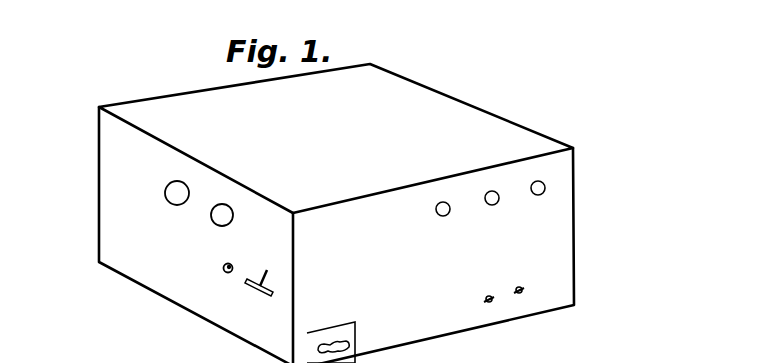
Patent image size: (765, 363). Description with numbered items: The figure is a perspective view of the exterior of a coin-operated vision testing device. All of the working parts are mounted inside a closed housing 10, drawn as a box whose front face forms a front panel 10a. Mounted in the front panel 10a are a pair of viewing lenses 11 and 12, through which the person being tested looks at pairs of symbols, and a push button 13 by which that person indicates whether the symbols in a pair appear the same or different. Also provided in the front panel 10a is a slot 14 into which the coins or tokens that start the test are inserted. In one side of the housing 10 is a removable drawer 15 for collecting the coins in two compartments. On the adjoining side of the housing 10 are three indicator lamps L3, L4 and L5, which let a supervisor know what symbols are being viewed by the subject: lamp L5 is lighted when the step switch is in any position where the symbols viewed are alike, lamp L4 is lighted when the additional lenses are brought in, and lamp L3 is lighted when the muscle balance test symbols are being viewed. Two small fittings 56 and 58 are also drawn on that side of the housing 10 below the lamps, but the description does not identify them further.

The housing 10 is at (471, 118).
The front panel 10a is at (112, 228).
The viewing lens 11 is at (222, 216).
The viewing lens 12 is at (177, 193).
The push button 13 is at (231, 263).
The slot 14 is at (263, 276).
The removable drawer 15 is at (333, 333).
The indicator lamp L3 is at (446, 196).
The indicator lamp L4 is at (496, 184).
The indicator lamp L5 is at (539, 181).
The jack 56 is at (522, 289).
The jack 58 is at (485, 302).